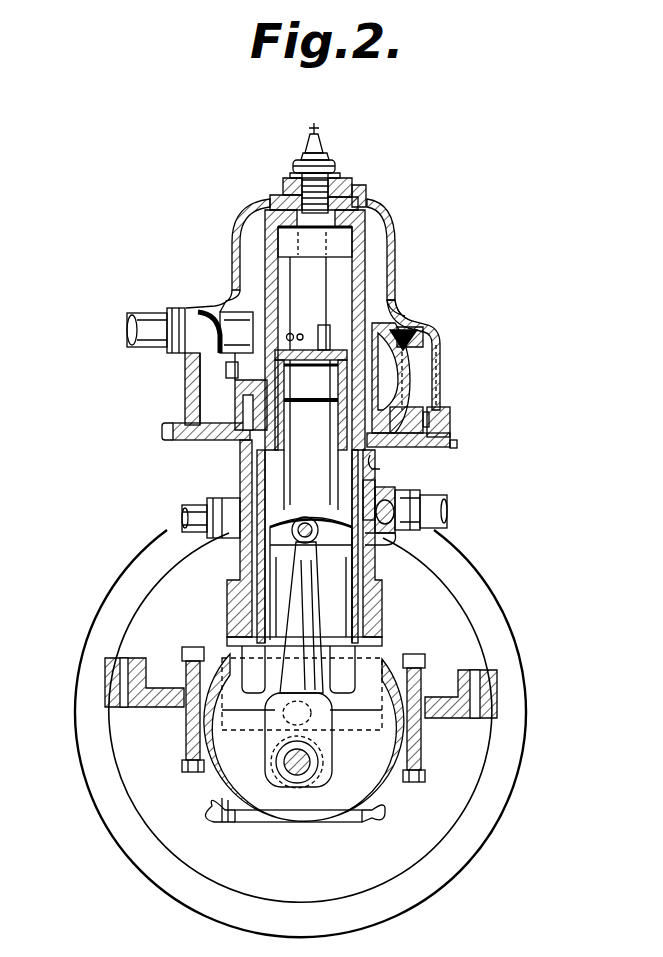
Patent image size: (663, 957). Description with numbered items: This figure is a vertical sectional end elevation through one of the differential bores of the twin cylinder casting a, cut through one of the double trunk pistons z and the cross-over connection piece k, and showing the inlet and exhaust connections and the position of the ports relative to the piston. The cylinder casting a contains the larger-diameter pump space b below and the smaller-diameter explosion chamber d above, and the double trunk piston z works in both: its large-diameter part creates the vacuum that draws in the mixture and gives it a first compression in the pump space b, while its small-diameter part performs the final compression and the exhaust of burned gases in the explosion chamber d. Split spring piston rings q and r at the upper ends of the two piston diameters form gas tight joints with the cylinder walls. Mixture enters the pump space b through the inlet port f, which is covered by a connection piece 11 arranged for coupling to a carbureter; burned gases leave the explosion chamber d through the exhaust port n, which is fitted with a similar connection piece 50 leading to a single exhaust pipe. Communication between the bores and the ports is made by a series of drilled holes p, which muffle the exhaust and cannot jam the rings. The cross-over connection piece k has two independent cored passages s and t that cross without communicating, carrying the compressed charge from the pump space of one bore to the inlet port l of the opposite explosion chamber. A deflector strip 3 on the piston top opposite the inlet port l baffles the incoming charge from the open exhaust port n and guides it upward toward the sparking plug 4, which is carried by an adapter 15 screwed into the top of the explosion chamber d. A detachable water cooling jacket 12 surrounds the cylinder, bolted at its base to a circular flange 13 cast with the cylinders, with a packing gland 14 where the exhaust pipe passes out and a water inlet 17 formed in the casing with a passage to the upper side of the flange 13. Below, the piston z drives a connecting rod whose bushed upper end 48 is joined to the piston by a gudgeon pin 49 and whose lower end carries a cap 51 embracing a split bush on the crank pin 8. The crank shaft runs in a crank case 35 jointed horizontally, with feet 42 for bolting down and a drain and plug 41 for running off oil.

The sparking plug 4 is at (327, 158).
The adapter 15 is at (343, 182).
The water cooling jacket 12 is at (395, 245).
The inlet port l is at (395, 302).
The cored passage s is at (433, 327).
The circular flange 13 is at (457, 446).
The twin cylinder casting a is at (366, 233).
The explosion chamber d is at (265, 237).
The holes p is at (291, 333).
The deflector 3 is at (322, 325).
The double trunk piston z is at (311, 430).
The packing gland 14 is at (178, 318).
The exhaust port n is at (246, 318).
The connection piece 50 is at (226, 370).
The piston ring q is at (262, 384).
The double cross-over connection piece k is at (395, 362).
The cored passage t is at (400, 409).
The pump space b is at (265, 452).
The mixture inlet port f is at (392, 494).
The connection piece 11 is at (420, 501).
The piston ring r is at (386, 539).
The water inlet 17 is at (222, 520).
The gudgeon pin 49 is at (305, 517).
The bushed upper end 48 is at (295, 552).
The crank pin 8 is at (319, 759).
The feet 42 is at (105, 666).
The crank case 35 is at (385, 656).
The cap 51 is at (292, 808).
The drain and plug 41 is at (375, 820).